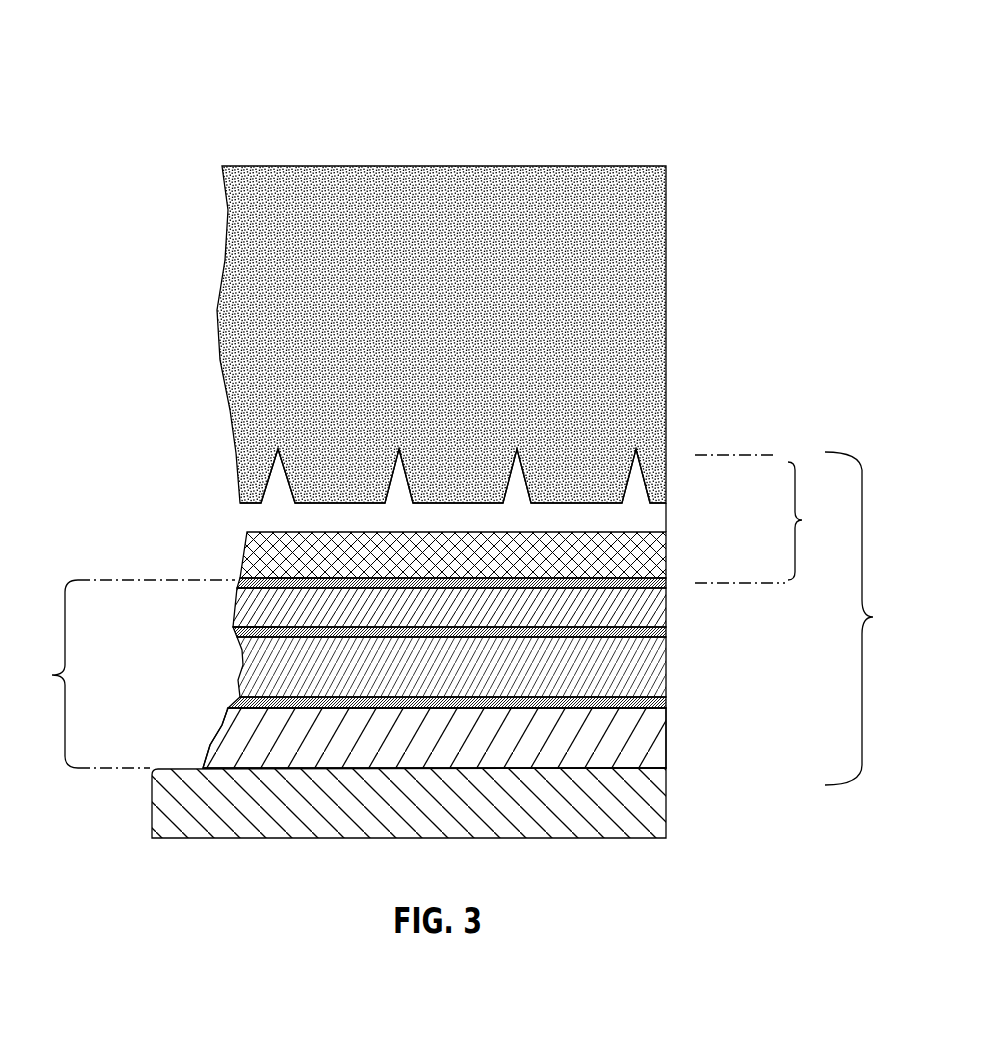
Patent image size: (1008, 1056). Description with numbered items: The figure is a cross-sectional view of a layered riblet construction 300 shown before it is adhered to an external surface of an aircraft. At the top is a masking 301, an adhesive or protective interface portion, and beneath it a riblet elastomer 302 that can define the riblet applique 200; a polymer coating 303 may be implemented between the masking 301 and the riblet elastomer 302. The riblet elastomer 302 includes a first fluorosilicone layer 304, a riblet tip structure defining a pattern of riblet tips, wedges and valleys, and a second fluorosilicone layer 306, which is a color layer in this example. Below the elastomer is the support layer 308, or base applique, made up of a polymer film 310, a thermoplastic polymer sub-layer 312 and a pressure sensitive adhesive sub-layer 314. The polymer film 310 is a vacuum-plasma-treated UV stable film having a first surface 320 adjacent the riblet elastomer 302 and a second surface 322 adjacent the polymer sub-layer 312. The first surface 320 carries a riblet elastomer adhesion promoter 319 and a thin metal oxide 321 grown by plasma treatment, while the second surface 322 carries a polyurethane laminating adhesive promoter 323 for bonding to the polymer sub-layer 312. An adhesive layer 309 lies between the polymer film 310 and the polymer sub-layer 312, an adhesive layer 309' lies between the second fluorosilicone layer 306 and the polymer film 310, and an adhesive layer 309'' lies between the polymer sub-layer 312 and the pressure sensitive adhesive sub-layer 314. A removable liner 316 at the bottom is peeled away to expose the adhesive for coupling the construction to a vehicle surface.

The layered riblet construction 300 is at (124, 41).
The riblet applique 200 is at (876, 618).
The masking 301 is at (491, 334).
The riblet elastomer 302 is at (762, 519).
The polymer coating 303 is at (395, 312).
The first fluorosilicone layer 304 is at (504, 549).
The second fluorosilicone layer 306 is at (503, 587).
The support layer 308 is at (121, 674).
The adhesive layer 309 is at (521, 612).
The adhesive layer 309' is at (534, 667).
The adhesive layer 309'' is at (520, 738).
The polymer film 310 is at (501, 645).
The polymer sub-layer 312 is at (498, 707).
The pressure sensitive adhesive sub-layer 314 is at (486, 749).
The removable liner 316 is at (460, 806).
The riblet elastomer adhesion promoter 319 is at (171, 449).
The first surface 320 is at (147, 560).
The metal oxide 321 is at (217, 402).
The second surface 322 is at (171, 636).
The polyurethane laminating adhesive promoter 323 is at (161, 521).